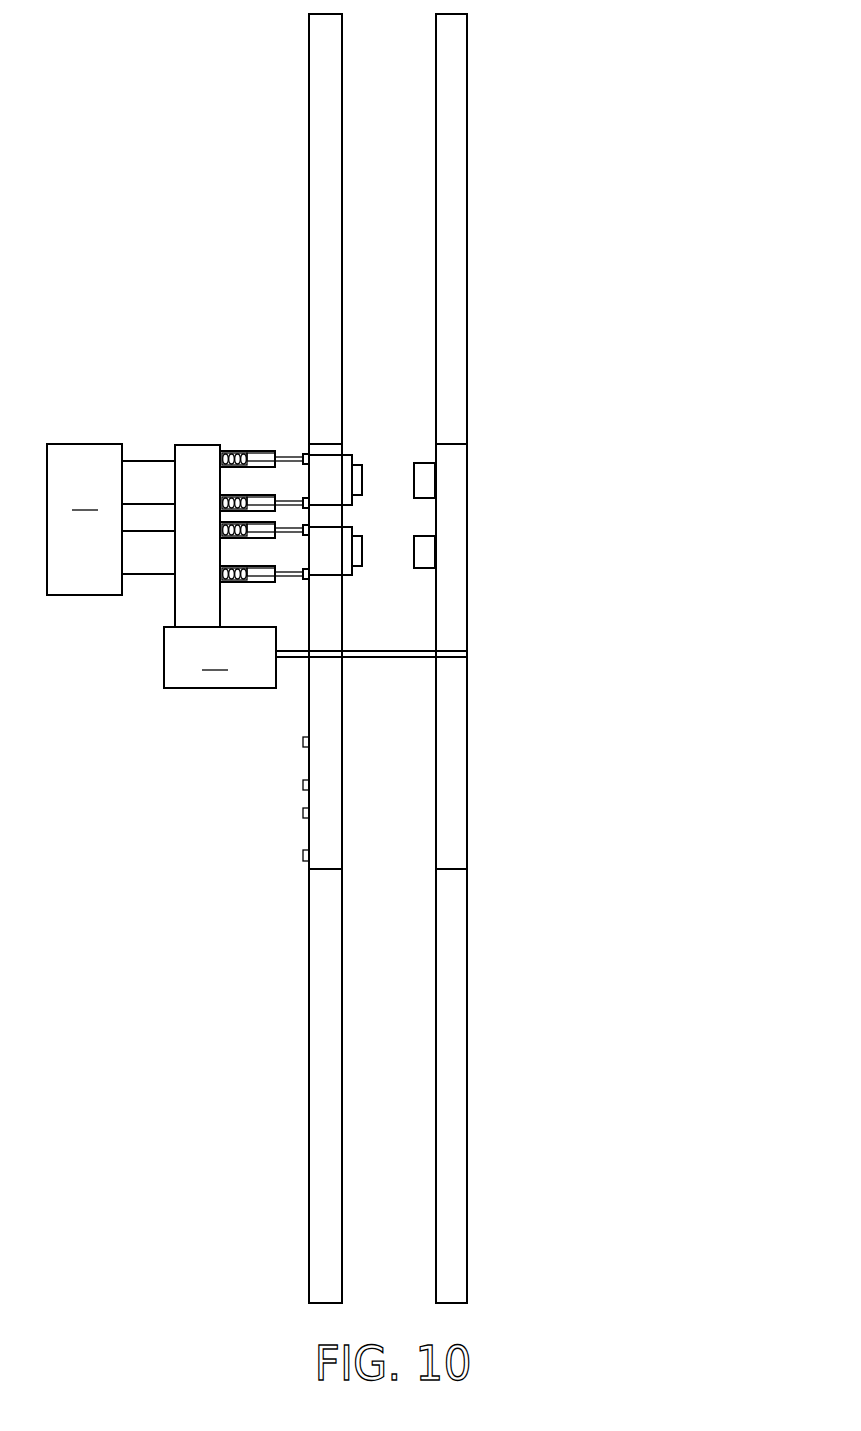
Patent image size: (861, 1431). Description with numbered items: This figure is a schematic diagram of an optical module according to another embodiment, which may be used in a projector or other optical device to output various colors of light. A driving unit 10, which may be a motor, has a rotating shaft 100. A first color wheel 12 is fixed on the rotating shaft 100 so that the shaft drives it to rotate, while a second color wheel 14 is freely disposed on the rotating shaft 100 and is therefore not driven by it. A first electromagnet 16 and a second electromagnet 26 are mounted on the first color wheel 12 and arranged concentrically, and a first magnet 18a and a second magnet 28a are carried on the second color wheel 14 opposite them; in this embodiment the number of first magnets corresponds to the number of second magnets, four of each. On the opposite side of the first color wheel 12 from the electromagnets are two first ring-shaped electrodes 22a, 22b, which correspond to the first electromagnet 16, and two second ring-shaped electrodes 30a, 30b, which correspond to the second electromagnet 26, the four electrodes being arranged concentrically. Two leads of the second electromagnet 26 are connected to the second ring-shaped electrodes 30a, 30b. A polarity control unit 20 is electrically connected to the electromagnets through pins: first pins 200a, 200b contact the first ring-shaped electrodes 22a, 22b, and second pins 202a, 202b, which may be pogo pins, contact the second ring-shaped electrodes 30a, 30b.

The driving unit 10 is at (220, 657).
The first color wheel 12 is at (317, 112).
The second color wheel 14 is at (452, 113).
The first electromagnet 16 is at (353, 480).
The first magnet 18a is at (427, 478).
The polarity control unit 20 is at (84, 519).
The first ring-shaped electrode 22a is at (302, 452).
The first ring-shaped electrode 22b is at (303, 500).
The second electromagnet 26 is at (357, 540).
The second magnet 28a is at (427, 552).
The second ring-shaped electrode 30a is at (305, 537).
The second ring-shaped electrode 30b is at (303, 580).
The rotating shaft 100 is at (412, 655).
The first pin 200a is at (268, 455).
The first pin 200b is at (254, 494).
The second pin 202a is at (257, 540).
The second pin 202b is at (287, 577).